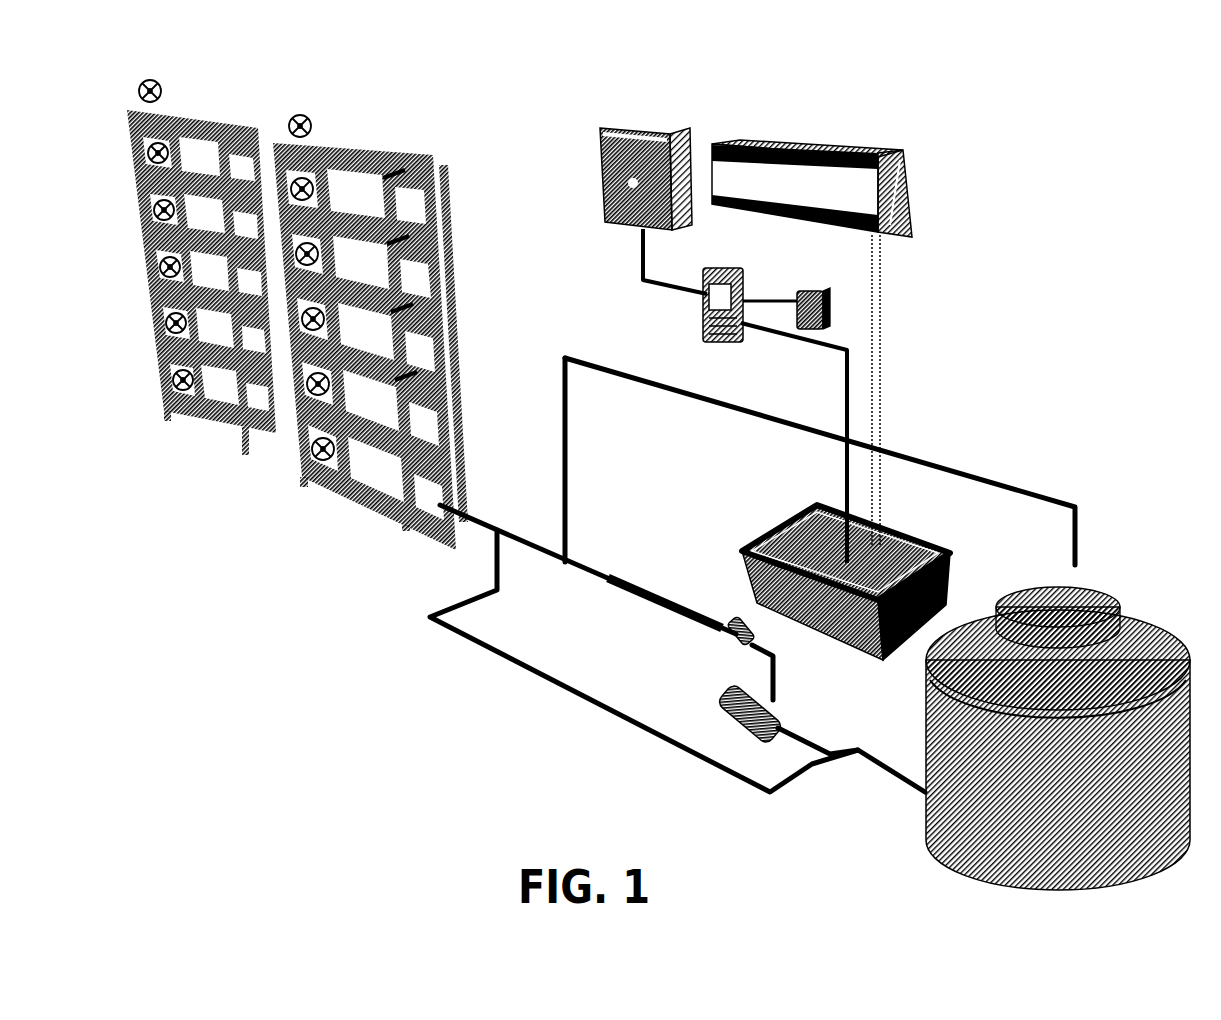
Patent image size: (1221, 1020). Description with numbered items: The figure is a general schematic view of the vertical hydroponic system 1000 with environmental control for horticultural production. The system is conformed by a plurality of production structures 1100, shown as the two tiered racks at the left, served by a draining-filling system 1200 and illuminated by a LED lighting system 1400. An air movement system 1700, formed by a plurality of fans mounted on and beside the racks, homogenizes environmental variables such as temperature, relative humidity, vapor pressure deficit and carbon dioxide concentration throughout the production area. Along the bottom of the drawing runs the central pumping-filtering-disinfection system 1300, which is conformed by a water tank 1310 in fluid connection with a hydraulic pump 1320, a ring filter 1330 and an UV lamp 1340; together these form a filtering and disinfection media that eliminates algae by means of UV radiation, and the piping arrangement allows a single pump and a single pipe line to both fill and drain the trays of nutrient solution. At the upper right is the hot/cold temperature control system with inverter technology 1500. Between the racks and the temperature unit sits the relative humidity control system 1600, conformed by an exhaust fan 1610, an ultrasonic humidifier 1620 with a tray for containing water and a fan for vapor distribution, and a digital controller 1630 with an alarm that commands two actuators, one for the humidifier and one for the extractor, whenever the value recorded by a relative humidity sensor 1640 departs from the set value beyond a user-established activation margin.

The vertical hydroponic system 1000 is at (658, 458).
The production structure 1100 is at (355, 138).
The draining-filling system 1200 is at (438, 286).
The LED lighting system 1400 is at (440, 173).
The air movement system 1700 is at (155, 82).
The central pumping-filtering-disinfection system 1300 is at (483, 652).
The water tank 1310 is at (1076, 584).
The hydraulic pump 1320 is at (716, 692).
The ring filter 1330 is at (758, 634).
The UV lamp 1340 is at (620, 597).
The hot/cold temperature control system 1500 is at (915, 195).
The relative humidity control system 1600 is at (697, 345).
The exhaust fan 1610 is at (598, 192).
The ultrasonic humidifier 1620 is at (782, 510).
The digital controller 1630 is at (700, 308).
The relative humidity sensor 1640 is at (800, 287).